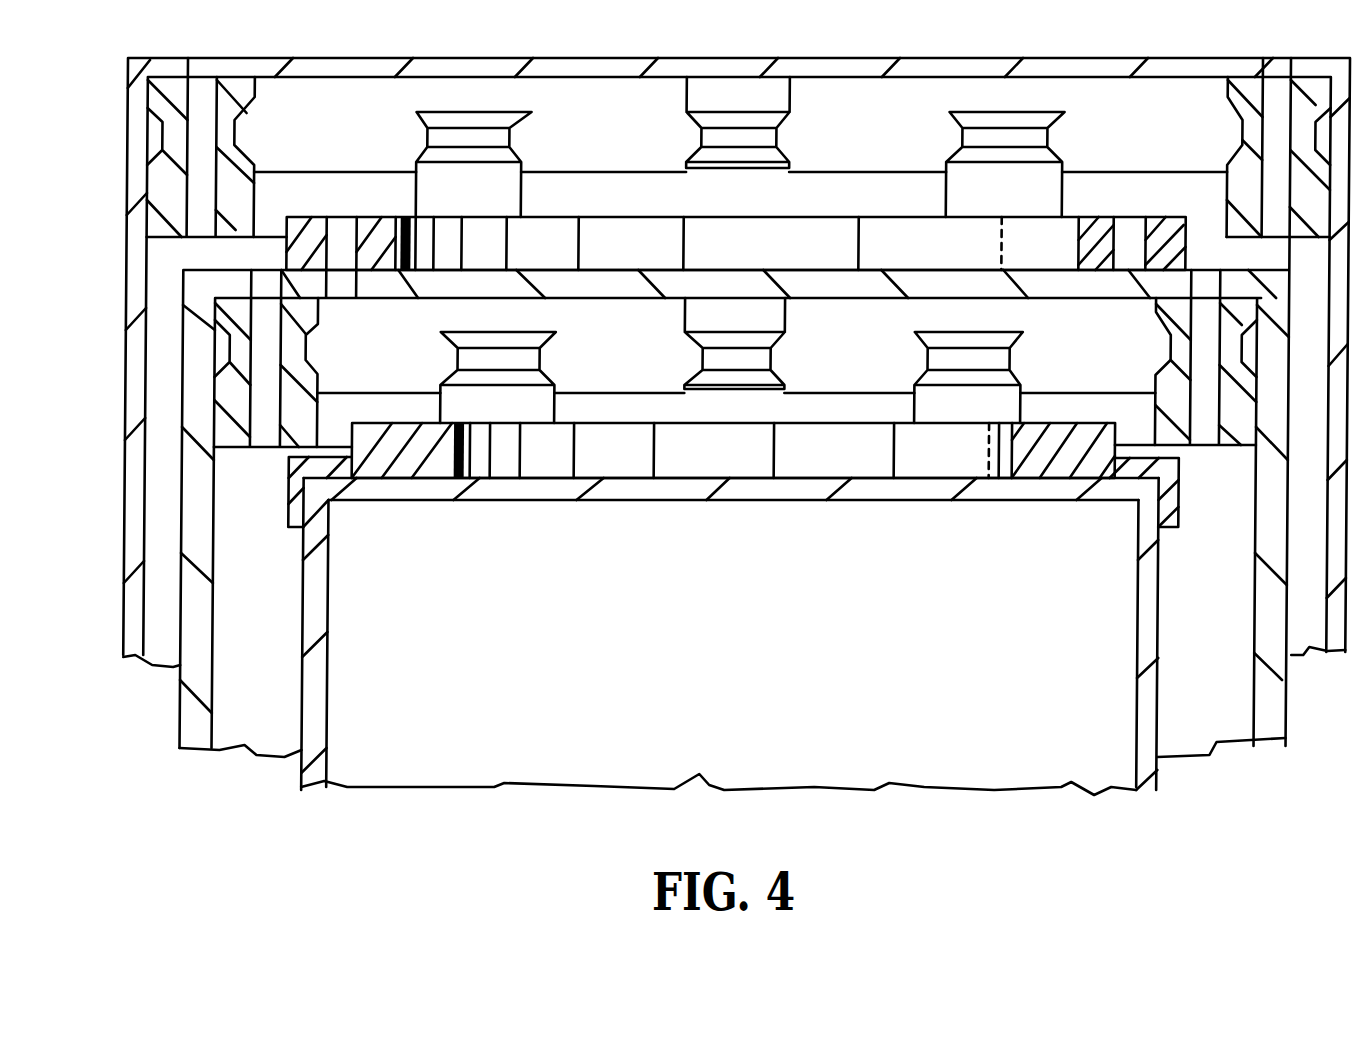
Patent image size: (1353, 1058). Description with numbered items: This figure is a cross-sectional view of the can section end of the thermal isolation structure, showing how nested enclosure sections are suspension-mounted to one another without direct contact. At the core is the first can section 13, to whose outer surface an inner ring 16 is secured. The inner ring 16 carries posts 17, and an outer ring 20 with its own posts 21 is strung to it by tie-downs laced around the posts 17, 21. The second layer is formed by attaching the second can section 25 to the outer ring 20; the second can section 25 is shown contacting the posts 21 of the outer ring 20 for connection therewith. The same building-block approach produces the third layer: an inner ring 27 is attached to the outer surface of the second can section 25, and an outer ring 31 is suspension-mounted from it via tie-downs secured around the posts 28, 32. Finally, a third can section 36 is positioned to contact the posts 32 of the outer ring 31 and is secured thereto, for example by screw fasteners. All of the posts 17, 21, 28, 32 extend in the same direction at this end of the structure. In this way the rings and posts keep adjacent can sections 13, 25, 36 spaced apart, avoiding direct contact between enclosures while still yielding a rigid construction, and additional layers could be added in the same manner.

The first can section 13 is at (306, 738).
The inner ring 16 is at (300, 508).
The posts 17 is at (453, 358).
The outer ring 20 is at (591, 392).
The posts 21 is at (321, 305).
The second can section 25 is at (185, 720).
The inner ring 27 is at (786, 214).
The posts 28 is at (511, 134).
The outer ring 31 is at (1082, 171).
The posts 32 is at (262, 99).
The third can section 36 is at (131, 618).